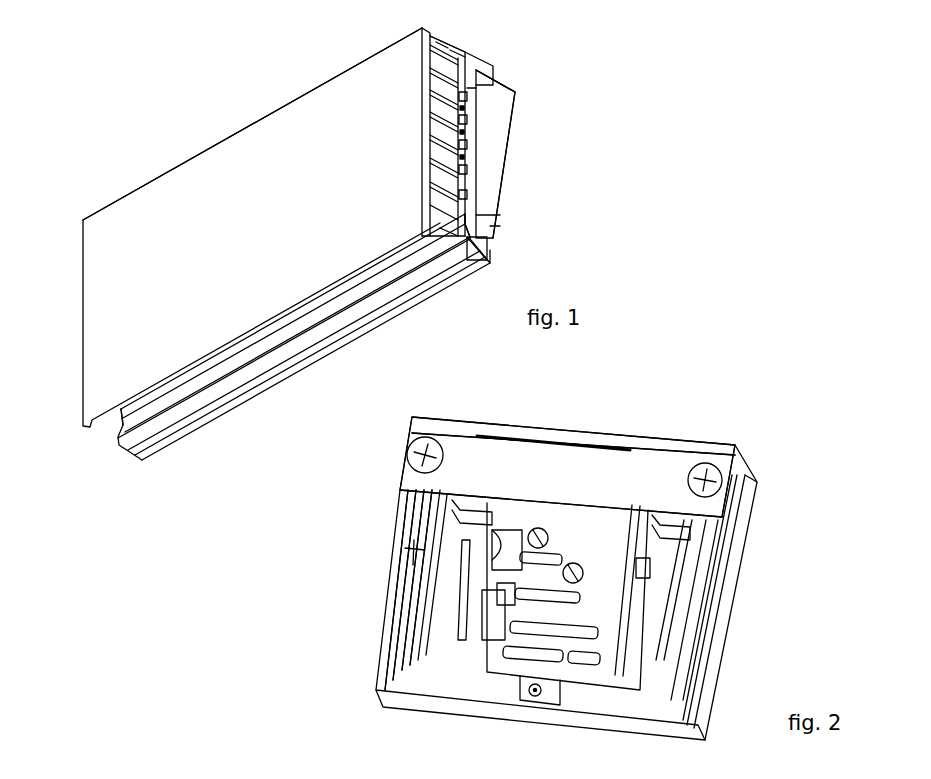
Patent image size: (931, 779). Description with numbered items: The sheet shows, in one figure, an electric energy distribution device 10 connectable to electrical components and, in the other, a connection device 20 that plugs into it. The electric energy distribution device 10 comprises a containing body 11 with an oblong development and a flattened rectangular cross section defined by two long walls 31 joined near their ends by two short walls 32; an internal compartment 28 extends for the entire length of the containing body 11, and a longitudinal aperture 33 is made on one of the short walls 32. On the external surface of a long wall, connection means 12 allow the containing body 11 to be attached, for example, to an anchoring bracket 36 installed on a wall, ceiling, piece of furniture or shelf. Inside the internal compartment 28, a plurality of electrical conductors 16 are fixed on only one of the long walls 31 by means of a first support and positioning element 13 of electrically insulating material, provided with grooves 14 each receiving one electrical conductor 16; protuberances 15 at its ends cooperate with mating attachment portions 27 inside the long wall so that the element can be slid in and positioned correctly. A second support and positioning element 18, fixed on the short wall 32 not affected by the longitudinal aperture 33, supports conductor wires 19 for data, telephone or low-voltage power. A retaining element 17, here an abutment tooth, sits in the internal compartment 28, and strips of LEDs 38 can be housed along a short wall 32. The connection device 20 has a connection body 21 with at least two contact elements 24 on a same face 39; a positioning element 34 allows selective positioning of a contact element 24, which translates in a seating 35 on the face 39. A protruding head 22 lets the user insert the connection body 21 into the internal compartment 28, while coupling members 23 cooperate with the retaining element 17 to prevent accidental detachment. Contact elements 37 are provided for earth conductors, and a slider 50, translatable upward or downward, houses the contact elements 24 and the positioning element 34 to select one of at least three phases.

In FIG. 1, the electric energy distribution device 10 is at (96, 130).
In FIG. 1, the containing body 11 is at (181, 164).
In FIG. 1, the connection means 12 is at (482, 75).
In FIG. 1, the first support and positioning element 13 is at (500, 152).
In FIG. 1, the grooves 14 is at (458, 98).
In FIG. 1, the protuberances 15 is at (468, 87).
In FIG. 1, the electrical conductors 16 is at (468, 106).
In FIG. 1, the retaining element 17 is at (434, 66).
In FIG. 1, the second support and positioning element 18 is at (432, 48).
In FIG. 1, the conductor wires 19 is at (442, 52).
In FIG. 2, the connection device 20 is at (320, 519).
In FIG. 2, the connection body 21 is at (724, 667).
In FIG. 2, the head 22 is at (738, 500).
In FIG. 2, the coupling members 23 is at (538, 697).
In FIG. 2, the contact elements 24 is at (497, 592).
In FIG. 1, the attachment portions 27 is at (476, 107).
In FIG. 1, the internal compartment 28 is at (400, 265).
In FIG. 1, the long walls 31 is at (270, 133).
In FIG. 1, the short wall 32 is at (458, 57).
In FIG. 1, the longitudinal aperture 33 is at (102, 433).
In FIG. 2, the positioning element 34 is at (490, 567).
In FIG. 2, the seating 35 is at (456, 534).
In FIG. 1, the anchoring bracket 36 is at (505, 163).
In FIG. 2, the contact elements 37 is at (470, 497).
In FIG. 1, the strips of LEDs 38 is at (472, 265).
In FIG. 2, the face 39 is at (606, 589).
In FIG. 2, the slider 50 is at (648, 556).